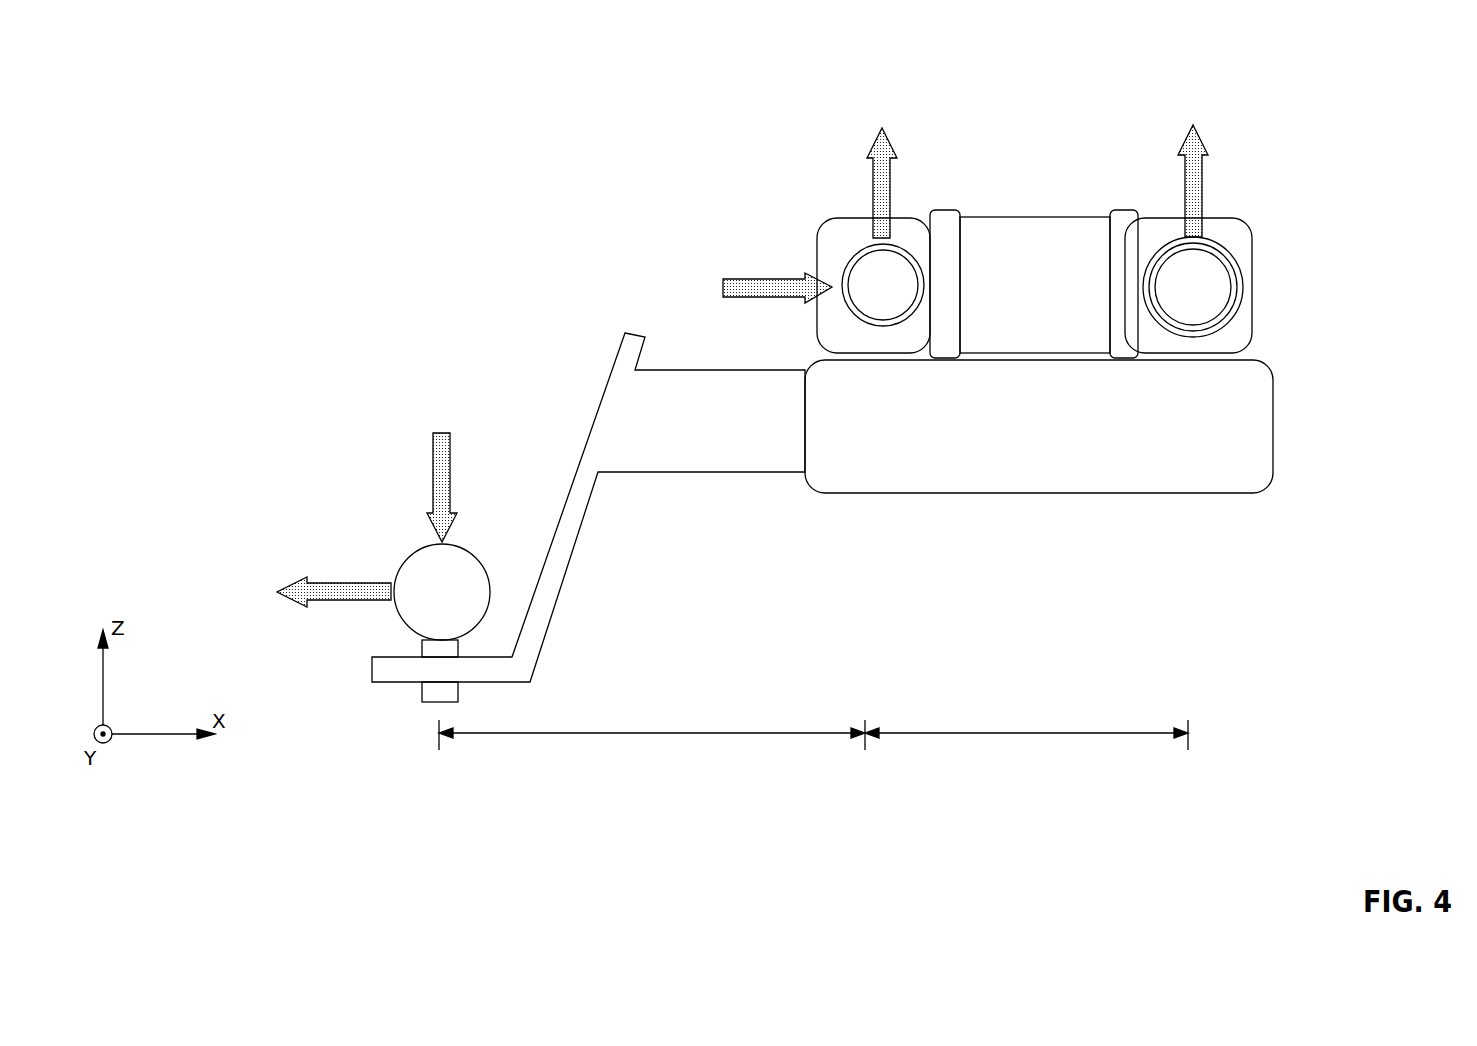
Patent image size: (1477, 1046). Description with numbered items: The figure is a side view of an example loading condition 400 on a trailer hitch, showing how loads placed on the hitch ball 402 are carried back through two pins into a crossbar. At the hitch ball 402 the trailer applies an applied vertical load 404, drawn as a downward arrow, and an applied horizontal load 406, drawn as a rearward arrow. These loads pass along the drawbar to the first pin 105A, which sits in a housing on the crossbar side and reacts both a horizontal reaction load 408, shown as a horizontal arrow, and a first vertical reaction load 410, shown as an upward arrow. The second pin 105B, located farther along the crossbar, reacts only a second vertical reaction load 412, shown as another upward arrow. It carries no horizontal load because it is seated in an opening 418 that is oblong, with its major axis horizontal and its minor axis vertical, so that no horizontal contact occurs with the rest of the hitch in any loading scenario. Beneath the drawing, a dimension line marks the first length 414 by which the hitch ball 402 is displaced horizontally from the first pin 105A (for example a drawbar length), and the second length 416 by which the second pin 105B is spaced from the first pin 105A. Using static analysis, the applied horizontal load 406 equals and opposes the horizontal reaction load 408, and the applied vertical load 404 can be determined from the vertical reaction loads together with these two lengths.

The loading condition 400 is at (1314, 47).
The hitch ball 402 is at (410, 553).
The applied vertical load 404 is at (448, 448).
The applied horizontal load 406 is at (295, 582).
The horizontal reaction load 408 is at (752, 277).
The first vertical reaction load 410 is at (877, 145).
The second vertical reaction load 412 is at (1190, 137).
The first length 414 is at (542, 737).
The second length 416 is at (917, 737).
The opening 418 is at (1238, 256).
The first pin 105A is at (866, 323).
The second pin 105B is at (1193, 333).